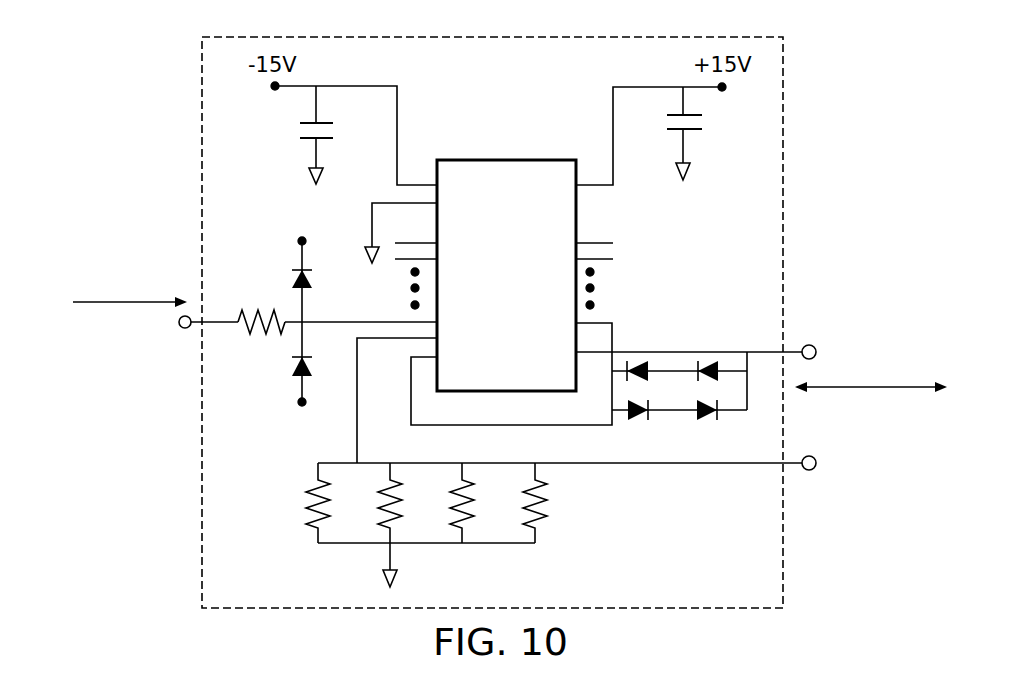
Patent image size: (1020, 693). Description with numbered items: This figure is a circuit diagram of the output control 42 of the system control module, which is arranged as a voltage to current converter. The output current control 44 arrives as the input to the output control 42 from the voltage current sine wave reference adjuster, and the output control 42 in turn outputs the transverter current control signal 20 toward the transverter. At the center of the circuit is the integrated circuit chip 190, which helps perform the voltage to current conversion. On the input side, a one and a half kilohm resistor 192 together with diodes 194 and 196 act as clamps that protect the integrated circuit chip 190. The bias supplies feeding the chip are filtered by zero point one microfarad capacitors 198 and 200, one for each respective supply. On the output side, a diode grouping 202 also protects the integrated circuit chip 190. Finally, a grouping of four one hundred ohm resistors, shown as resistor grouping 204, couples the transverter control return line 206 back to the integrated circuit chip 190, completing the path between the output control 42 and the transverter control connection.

The transverter current control signal 20 is at (838, 385).
The output control 42 is at (783, 240).
The output current control 44 is at (98, 302).
The integrated circuit chip 190 is at (493, 158).
The resistor 192 is at (252, 310).
The diode 194 is at (308, 280).
The diode 196 is at (295, 372).
The capacitor 198 is at (300, 131).
The capacitor 200 is at (702, 122).
The diode grouping 202 is at (685, 420).
The resistor grouping 204 is at (428, 562).
The transverter control return line 206 is at (790, 467).